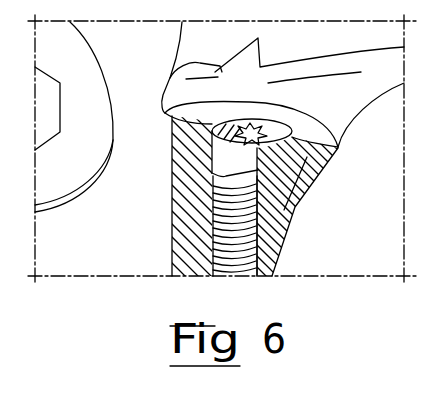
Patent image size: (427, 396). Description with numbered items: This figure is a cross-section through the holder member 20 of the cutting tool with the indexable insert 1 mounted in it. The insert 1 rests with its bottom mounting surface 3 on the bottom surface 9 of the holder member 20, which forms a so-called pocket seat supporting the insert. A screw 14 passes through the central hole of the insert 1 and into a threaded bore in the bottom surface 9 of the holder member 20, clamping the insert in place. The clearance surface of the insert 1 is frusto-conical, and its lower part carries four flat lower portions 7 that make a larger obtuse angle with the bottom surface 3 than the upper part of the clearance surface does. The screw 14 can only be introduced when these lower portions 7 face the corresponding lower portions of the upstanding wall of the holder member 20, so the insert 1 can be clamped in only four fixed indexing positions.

The indexable insert 1 is at (224, 106).
The bottom mounting surface 3 is at (298, 209).
The lower portions 7 is at (322, 162).
The bottom surface 9 is at (212, 182).
The screw 14 is at (271, 134).
The holder member 20 is at (289, 216).